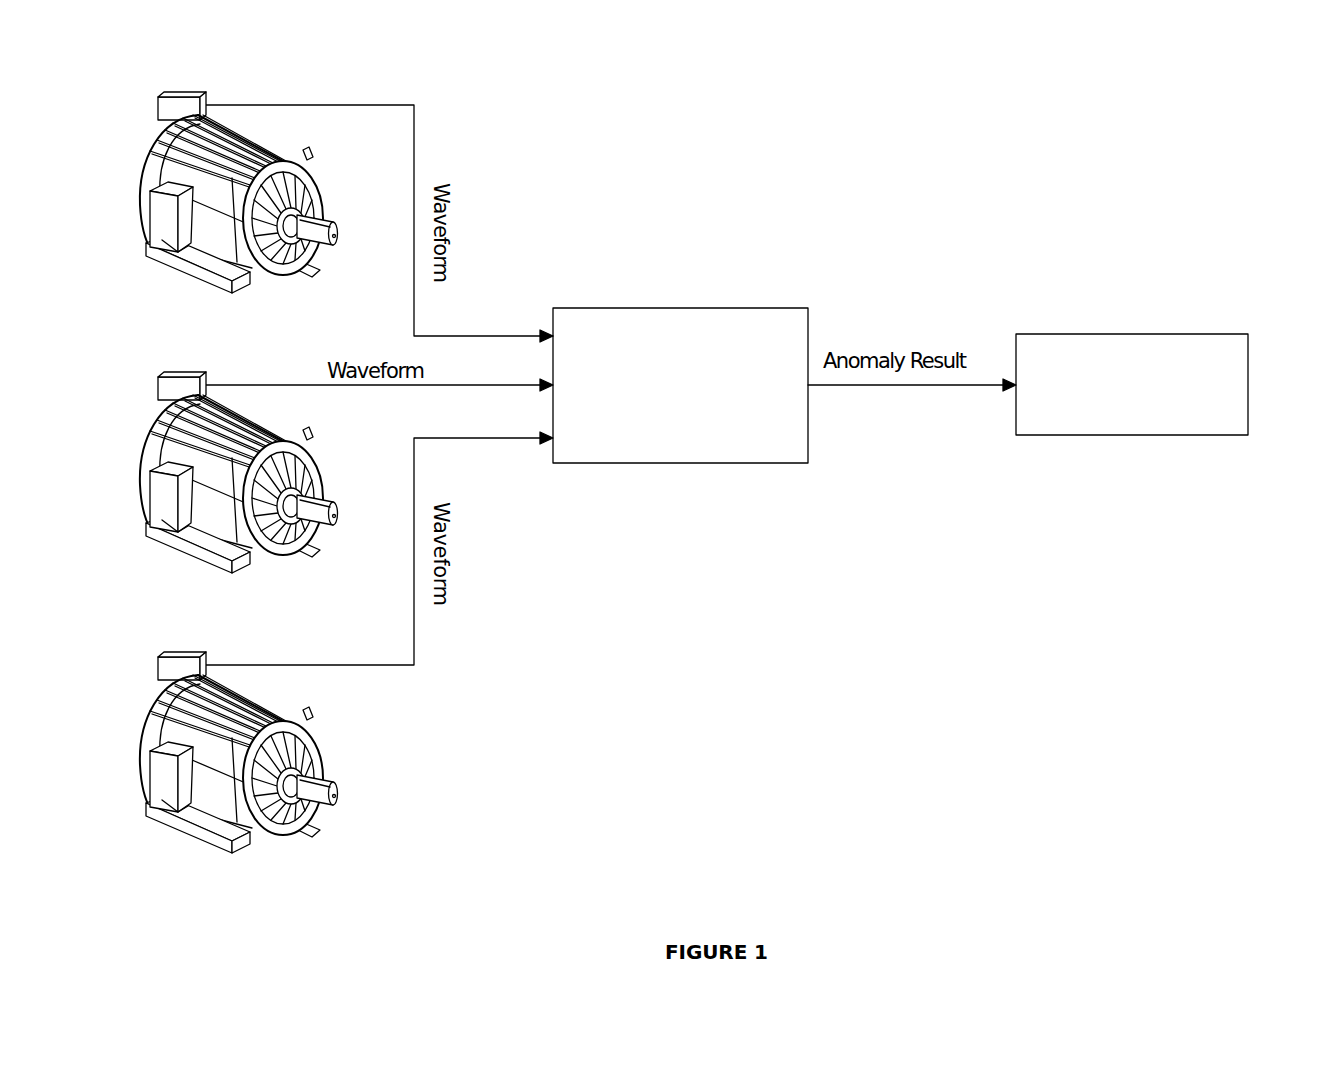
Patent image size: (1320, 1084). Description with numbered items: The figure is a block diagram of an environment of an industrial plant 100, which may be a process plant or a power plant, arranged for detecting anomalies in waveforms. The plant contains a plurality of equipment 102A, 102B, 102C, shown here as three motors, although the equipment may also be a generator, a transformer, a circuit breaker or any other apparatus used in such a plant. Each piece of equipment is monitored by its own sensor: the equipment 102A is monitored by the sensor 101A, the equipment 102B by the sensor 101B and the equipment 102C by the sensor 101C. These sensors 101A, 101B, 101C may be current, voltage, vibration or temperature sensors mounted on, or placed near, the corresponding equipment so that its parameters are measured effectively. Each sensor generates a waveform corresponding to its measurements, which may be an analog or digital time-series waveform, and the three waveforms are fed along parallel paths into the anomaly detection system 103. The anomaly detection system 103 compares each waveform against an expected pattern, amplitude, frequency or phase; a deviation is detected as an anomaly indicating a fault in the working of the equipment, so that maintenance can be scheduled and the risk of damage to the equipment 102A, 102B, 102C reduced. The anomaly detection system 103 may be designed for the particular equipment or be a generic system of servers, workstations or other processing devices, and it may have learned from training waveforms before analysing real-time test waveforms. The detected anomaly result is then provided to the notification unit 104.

The industrial plant 100 is at (1040, 129).
The sensor 101A is at (186, 96).
The sensor 101B is at (206, 381).
The sensor 101C is at (207, 663).
The equipment 102A is at (322, 202).
The equipment 102B is at (323, 488).
The equipment 102C is at (326, 790).
The anomaly detection system 103 is at (740, 307).
The notification unit 104 is at (1204, 333).